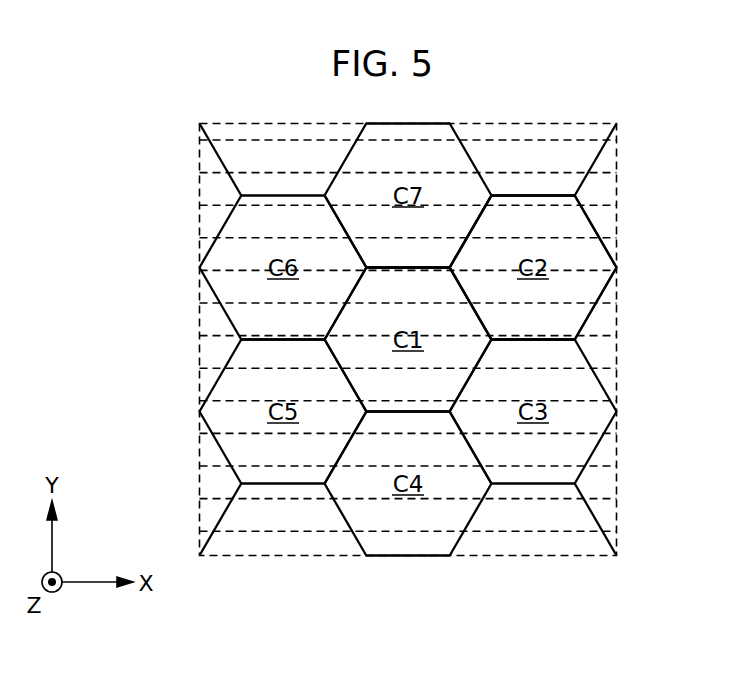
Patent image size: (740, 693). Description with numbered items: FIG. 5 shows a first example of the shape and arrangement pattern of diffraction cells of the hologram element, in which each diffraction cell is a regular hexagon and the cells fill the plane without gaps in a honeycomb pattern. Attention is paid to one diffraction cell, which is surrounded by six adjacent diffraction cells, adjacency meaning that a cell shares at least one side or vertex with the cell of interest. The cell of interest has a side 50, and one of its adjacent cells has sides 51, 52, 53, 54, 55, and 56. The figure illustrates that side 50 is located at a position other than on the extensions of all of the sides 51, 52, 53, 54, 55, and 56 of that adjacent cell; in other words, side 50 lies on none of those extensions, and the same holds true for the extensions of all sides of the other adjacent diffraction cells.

The side 50 is at (366, 266).
The side 51 is at (472, 228).
The side 52 is at (533, 194).
The side 53 is at (595, 230).
The side 54 is at (601, 295).
The side 55 is at (545, 341).
The side 56 is at (458, 284).